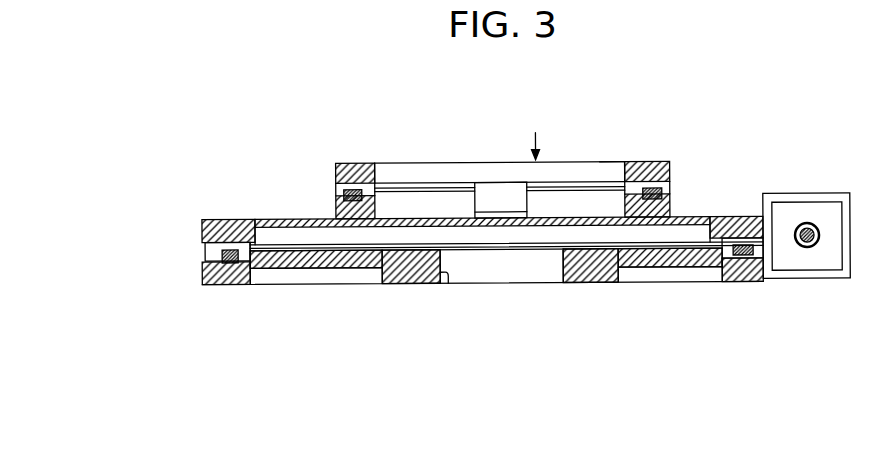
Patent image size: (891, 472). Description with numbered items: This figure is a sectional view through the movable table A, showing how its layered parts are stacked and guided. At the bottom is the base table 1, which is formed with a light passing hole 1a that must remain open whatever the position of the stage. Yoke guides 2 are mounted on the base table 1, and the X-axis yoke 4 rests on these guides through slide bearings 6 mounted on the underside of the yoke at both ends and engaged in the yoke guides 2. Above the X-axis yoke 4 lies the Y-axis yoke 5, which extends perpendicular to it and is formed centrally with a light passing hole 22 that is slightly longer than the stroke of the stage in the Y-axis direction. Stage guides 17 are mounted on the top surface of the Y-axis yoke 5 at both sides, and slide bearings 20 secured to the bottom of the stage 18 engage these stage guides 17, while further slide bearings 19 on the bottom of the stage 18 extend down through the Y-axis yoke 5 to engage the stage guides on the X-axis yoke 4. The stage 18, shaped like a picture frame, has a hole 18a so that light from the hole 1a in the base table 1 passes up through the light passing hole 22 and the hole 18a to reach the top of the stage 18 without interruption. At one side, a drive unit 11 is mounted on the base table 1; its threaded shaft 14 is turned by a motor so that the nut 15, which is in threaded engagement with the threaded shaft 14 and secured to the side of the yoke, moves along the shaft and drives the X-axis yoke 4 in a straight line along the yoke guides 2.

The base table 1 is at (599, 283).
The light passing hole 1a is at (446, 283).
The yoke guides 2 is at (221, 272).
The X-axis yoke 4 is at (218, 219).
The Y-axis yoke 5 is at (364, 195).
The slide bearings 6 is at (205, 247).
The drive unit 11 is at (789, 188).
The threaded shaft 14 is at (806, 250).
The nut 15 is at (828, 270).
The stage guides 17 is at (336, 192).
The stage 18 is at (647, 162).
The hole 18a is at (618, 162).
The slide bearings 19 is at (503, 212).
The slide bearings 20 is at (351, 170).
The light passing hole 22 is at (384, 187).
The movable table A is at (533, 131).